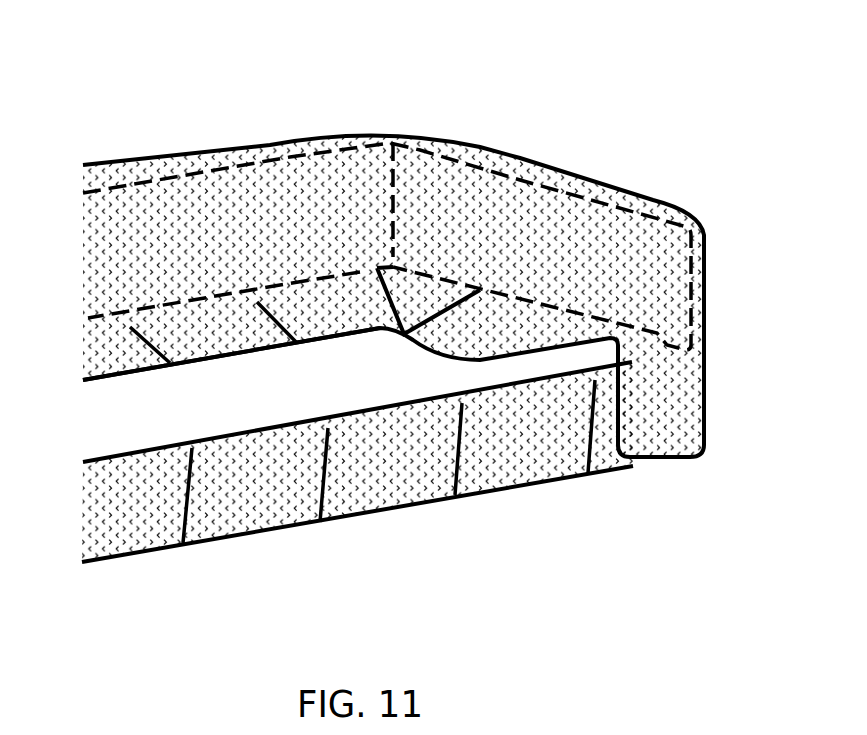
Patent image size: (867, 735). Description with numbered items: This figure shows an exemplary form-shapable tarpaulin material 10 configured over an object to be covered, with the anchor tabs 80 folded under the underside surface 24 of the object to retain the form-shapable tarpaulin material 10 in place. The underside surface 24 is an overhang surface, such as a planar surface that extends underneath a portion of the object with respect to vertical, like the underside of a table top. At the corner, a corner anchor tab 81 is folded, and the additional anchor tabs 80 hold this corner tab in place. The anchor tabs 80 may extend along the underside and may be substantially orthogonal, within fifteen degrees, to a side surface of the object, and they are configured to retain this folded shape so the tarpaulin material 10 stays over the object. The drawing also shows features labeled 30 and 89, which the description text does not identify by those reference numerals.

The form-shapable tarpaulin material 10 is at (617, 183).
The trim cover layer 30 is at (555, 172).
The corner anchor tab 81 is at (423, 287).
The notch 89 is at (317, 313).
The underside surface 24 is at (298, 377).
The anchor tabs 80 is at (537, 443).